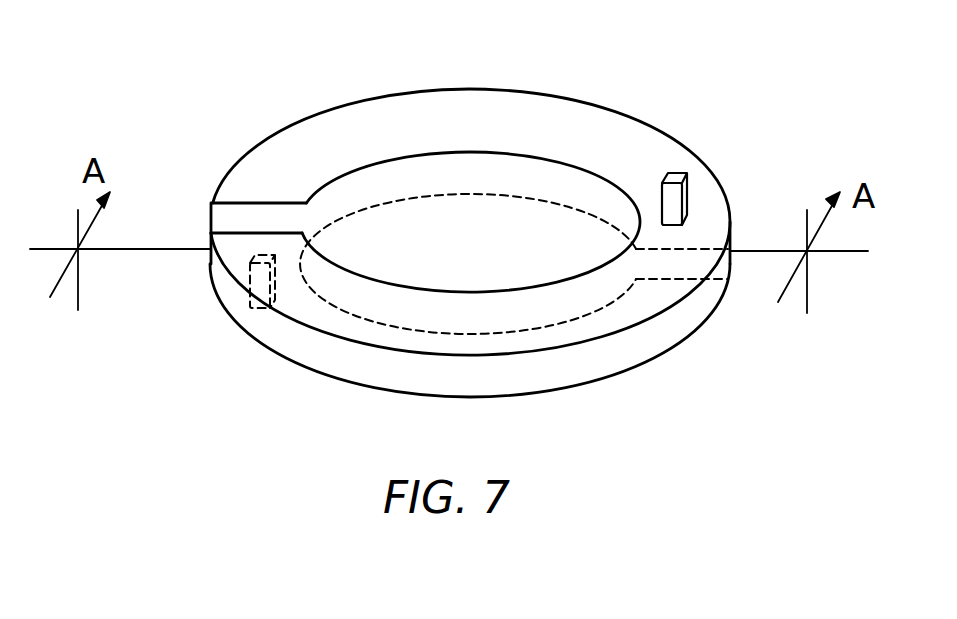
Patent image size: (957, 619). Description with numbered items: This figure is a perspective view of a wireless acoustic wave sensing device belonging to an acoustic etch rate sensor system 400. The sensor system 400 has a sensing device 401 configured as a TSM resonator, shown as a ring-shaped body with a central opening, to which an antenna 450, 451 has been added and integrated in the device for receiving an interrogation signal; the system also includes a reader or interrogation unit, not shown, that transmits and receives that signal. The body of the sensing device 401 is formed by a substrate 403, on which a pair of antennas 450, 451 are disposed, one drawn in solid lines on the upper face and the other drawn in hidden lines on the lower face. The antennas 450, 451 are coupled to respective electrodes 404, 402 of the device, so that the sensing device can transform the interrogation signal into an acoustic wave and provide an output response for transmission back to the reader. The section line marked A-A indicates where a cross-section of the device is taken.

The sensor system 400 is at (728, 87).
The sensing device 401 is at (307, 121).
The electrode 402 is at (577, 316).
The substrate 403 is at (348, 358).
The electrode 404 is at (465, 150).
The antenna 450 is at (688, 194).
The antenna 451 is at (250, 300).